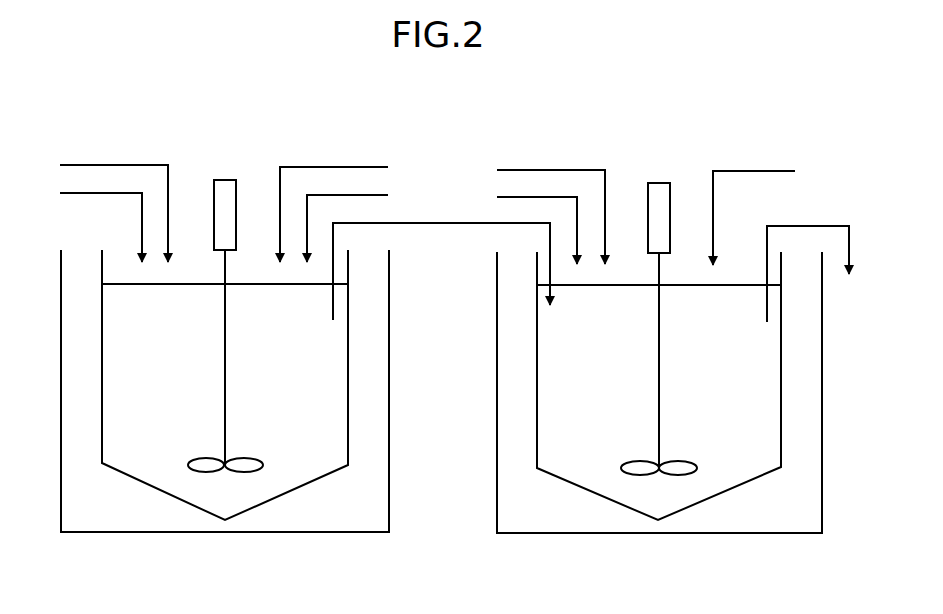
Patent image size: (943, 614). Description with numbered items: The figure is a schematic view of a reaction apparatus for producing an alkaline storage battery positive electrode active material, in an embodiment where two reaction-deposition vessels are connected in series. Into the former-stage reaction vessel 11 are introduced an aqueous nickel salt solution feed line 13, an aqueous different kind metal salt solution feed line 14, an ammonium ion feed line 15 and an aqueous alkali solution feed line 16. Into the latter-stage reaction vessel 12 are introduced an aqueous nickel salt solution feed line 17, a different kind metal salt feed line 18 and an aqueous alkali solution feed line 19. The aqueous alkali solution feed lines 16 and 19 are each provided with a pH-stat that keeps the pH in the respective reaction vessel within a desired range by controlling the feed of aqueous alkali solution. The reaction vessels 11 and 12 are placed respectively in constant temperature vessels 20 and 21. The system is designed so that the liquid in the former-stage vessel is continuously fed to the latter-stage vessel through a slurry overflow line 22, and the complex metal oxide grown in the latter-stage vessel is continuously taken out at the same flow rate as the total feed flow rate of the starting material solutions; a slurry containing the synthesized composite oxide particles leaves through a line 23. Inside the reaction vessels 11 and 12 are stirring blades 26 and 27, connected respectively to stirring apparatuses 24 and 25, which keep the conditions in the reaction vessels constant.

The reaction vessel 11 is at (155, 478).
The reaction vessel 12 is at (590, 480).
The aqueous nickel salt solution feed line 13 is at (144, 164).
The aqueous different kind metal salt solution feed line 14 is at (80, 192).
The ammonium ion feed line 15 is at (315, 166).
The aqueous alkali solution feed line 16 is at (356, 194).
The aqueous nickel salt solution feed line 17 is at (580, 169).
The different kind metal salt feed line 18 is at (516, 196).
The aqueous alkali solution feed line 19 is at (762, 170).
The constant temperature vessel 20 is at (362, 513).
The constant temperature vessel 21 is at (793, 515).
The slurry overflow line 22 is at (443, 222).
The line 23 is at (826, 225).
The stirring apparatus 24 is at (225, 179).
The stirring apparatus 25 is at (659, 182).
The stirring blade 26 is at (192, 460).
The stirring blade 27 is at (623, 463).